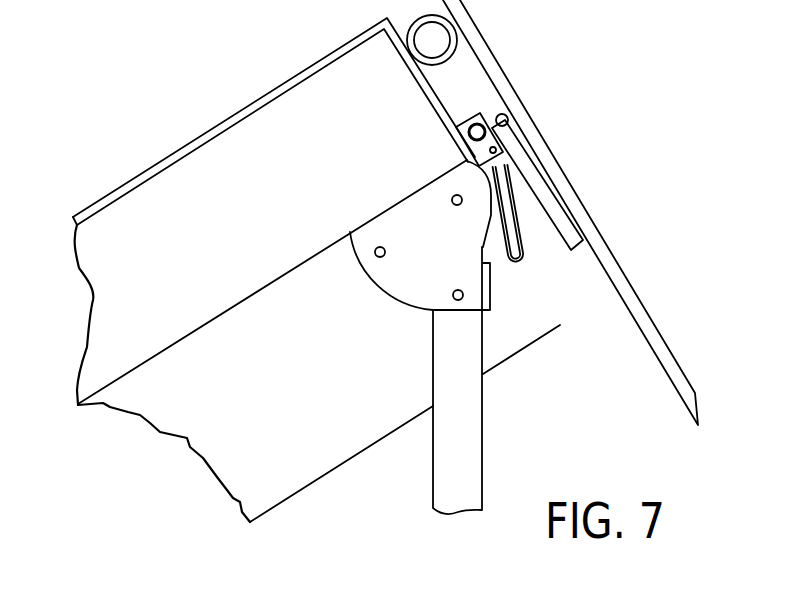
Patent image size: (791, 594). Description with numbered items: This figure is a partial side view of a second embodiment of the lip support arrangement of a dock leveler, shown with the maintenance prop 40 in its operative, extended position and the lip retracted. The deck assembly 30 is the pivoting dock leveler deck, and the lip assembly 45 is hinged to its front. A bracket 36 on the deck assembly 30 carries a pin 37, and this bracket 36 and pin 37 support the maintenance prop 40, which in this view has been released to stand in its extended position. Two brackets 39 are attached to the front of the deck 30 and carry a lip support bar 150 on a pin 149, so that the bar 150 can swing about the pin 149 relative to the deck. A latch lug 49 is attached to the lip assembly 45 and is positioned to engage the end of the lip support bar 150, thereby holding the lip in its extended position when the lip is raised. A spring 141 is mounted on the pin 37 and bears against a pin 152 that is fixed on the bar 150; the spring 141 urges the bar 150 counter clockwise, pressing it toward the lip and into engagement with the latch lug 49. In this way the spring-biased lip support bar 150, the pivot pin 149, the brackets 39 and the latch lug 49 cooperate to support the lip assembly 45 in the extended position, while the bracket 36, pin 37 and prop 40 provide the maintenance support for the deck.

The deck assembly 30 is at (210, 128).
The bracket 36 is at (407, 292).
The pin 37 is at (457, 206).
The brackets 39 is at (482, 124).
The maintenance prop 40 is at (475, 458).
The lip assembly 45 is at (622, 275).
The latch lug 49 is at (488, 114).
The spring 141 is at (526, 244).
The pin 149 is at (508, 121).
The lip support bar 150 is at (527, 183).
The pin 152 is at (500, 143).